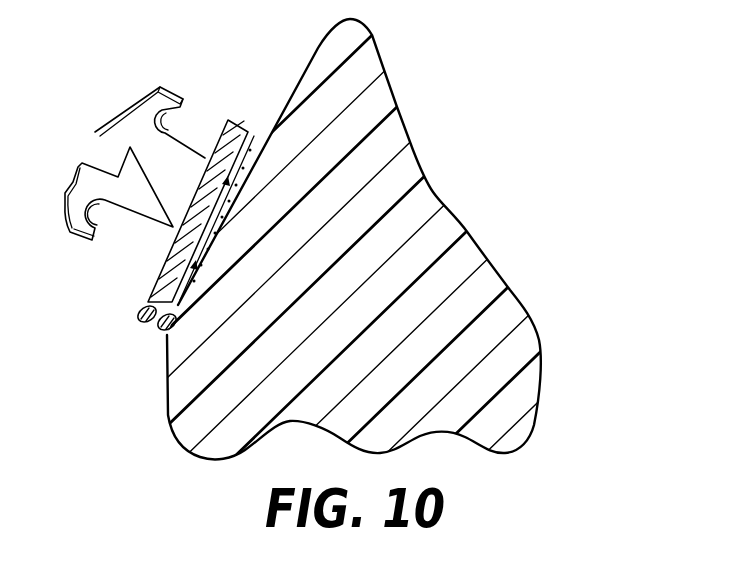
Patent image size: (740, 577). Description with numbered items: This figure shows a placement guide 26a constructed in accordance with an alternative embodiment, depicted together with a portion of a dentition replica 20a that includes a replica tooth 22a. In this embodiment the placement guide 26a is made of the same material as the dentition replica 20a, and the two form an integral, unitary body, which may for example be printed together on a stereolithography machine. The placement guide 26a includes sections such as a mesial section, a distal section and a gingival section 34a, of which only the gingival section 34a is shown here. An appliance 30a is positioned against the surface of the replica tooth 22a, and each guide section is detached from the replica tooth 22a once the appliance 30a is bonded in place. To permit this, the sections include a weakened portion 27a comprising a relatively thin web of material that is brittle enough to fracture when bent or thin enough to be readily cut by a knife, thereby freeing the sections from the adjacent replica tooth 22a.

The dentition replica 20a is at (361, 288).
The replica tooth 22a is at (380, 97).
The placement guide 26a is at (138, 317).
The weakened portion 27a is at (160, 331).
The appliance 30a is at (123, 113).
The gingival section 34a is at (145, 319).